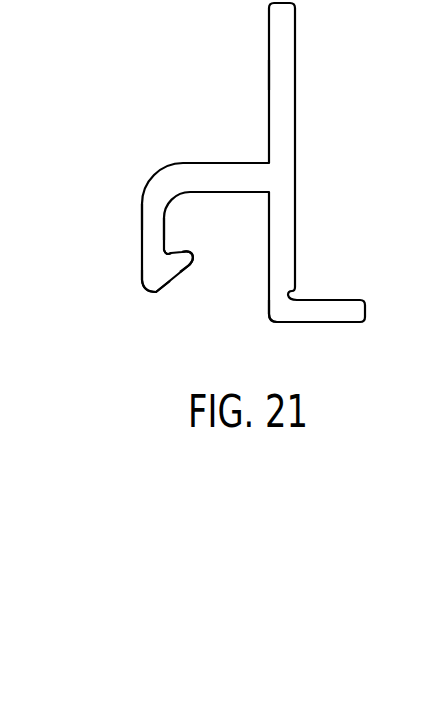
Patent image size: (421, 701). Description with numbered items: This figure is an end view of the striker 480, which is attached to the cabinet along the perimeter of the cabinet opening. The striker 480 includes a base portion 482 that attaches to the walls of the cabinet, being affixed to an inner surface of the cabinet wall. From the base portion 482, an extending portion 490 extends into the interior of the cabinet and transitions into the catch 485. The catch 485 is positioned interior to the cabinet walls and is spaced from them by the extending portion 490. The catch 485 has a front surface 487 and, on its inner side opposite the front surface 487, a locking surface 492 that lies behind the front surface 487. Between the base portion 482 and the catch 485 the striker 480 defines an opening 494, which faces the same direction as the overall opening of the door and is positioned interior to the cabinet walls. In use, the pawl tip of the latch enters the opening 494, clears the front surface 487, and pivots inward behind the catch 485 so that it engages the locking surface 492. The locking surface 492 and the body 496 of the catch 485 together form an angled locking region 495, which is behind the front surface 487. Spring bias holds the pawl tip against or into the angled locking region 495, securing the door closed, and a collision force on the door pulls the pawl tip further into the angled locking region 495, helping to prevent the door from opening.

The striker 480 is at (358, 87).
The base portion 482 is at (282, 74).
The catch 485 is at (171, 282).
The front surface 487 is at (184, 273).
The extending portion 490 is at (235, 163).
The locking surface 492 is at (183, 250).
The opening 494 is at (229, 277).
The angled locking region 495 is at (170, 252).
The body 496 is at (160, 189).